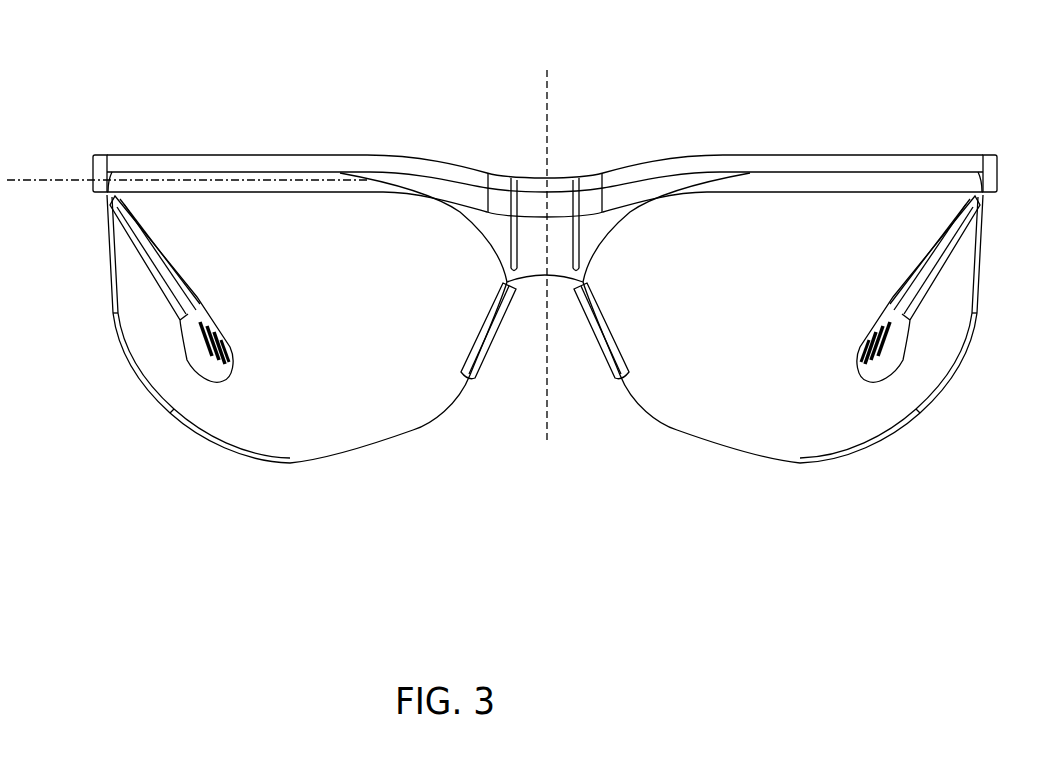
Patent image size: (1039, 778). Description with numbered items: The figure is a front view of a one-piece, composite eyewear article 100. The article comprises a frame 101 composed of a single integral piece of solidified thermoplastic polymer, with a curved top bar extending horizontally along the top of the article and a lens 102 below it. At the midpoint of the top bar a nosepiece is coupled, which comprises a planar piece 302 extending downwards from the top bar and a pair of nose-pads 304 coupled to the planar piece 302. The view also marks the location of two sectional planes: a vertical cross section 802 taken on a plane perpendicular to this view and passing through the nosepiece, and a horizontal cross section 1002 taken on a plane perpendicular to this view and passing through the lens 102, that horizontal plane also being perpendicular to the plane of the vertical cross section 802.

The one-piece, composite eyewear article 100 is at (502, 299).
The frame 101 is at (728, 146).
The lens 102 is at (743, 462).
The planar piece 302 is at (537, 246).
The nose-pads 304 is at (472, 342).
The vertical cross section 802 is at (547, 70).
The horizontal cross section 1002 is at (13, 180).